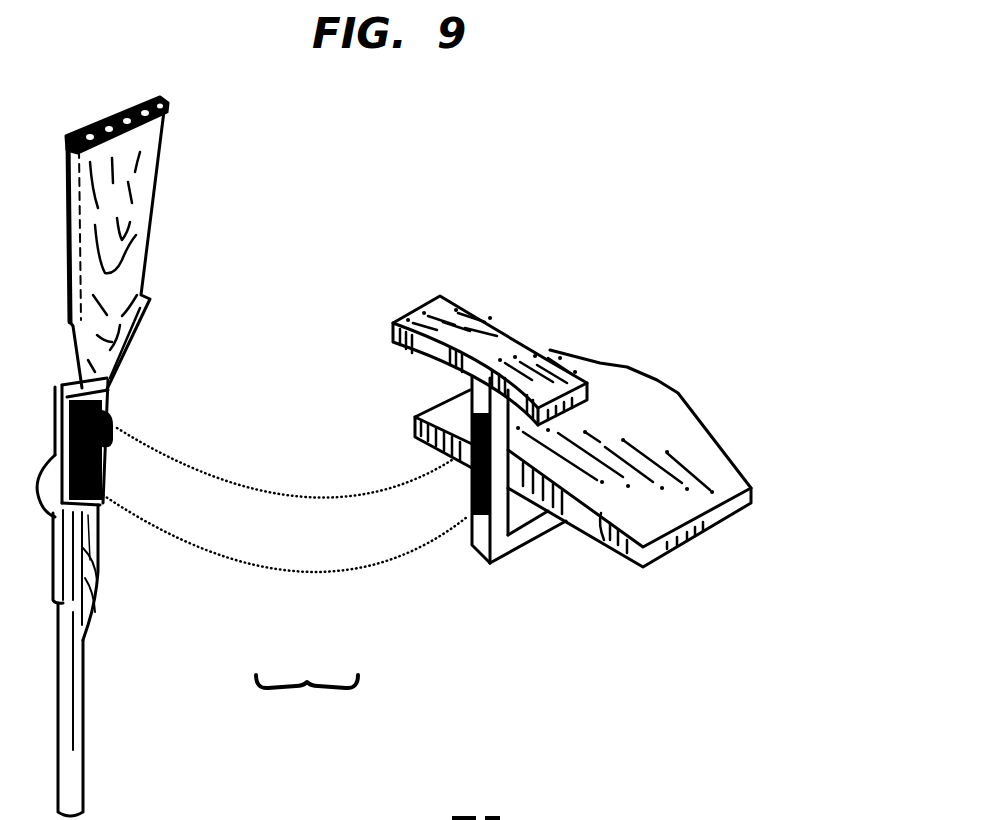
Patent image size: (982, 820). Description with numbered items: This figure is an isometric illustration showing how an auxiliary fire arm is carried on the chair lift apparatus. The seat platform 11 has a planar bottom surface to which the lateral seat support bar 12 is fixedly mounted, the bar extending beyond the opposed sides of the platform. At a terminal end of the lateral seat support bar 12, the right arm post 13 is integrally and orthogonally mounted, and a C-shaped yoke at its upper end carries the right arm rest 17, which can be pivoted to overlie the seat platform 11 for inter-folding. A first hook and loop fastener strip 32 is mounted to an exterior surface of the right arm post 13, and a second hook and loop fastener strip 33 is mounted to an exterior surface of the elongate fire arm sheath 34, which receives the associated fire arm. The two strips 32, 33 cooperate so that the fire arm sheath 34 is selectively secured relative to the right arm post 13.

The seat platform 11 is at (606, 535).
The lateral seat support bar 12 is at (513, 547).
The right arm post 13 is at (473, 545).
The right arm rest 17 is at (507, 335).
The first hook and loop fastener strip 32 is at (470, 487).
The second hook and loop fastener strip 33 is at (102, 478).
The elongate fire arm sheath 34 is at (88, 538).